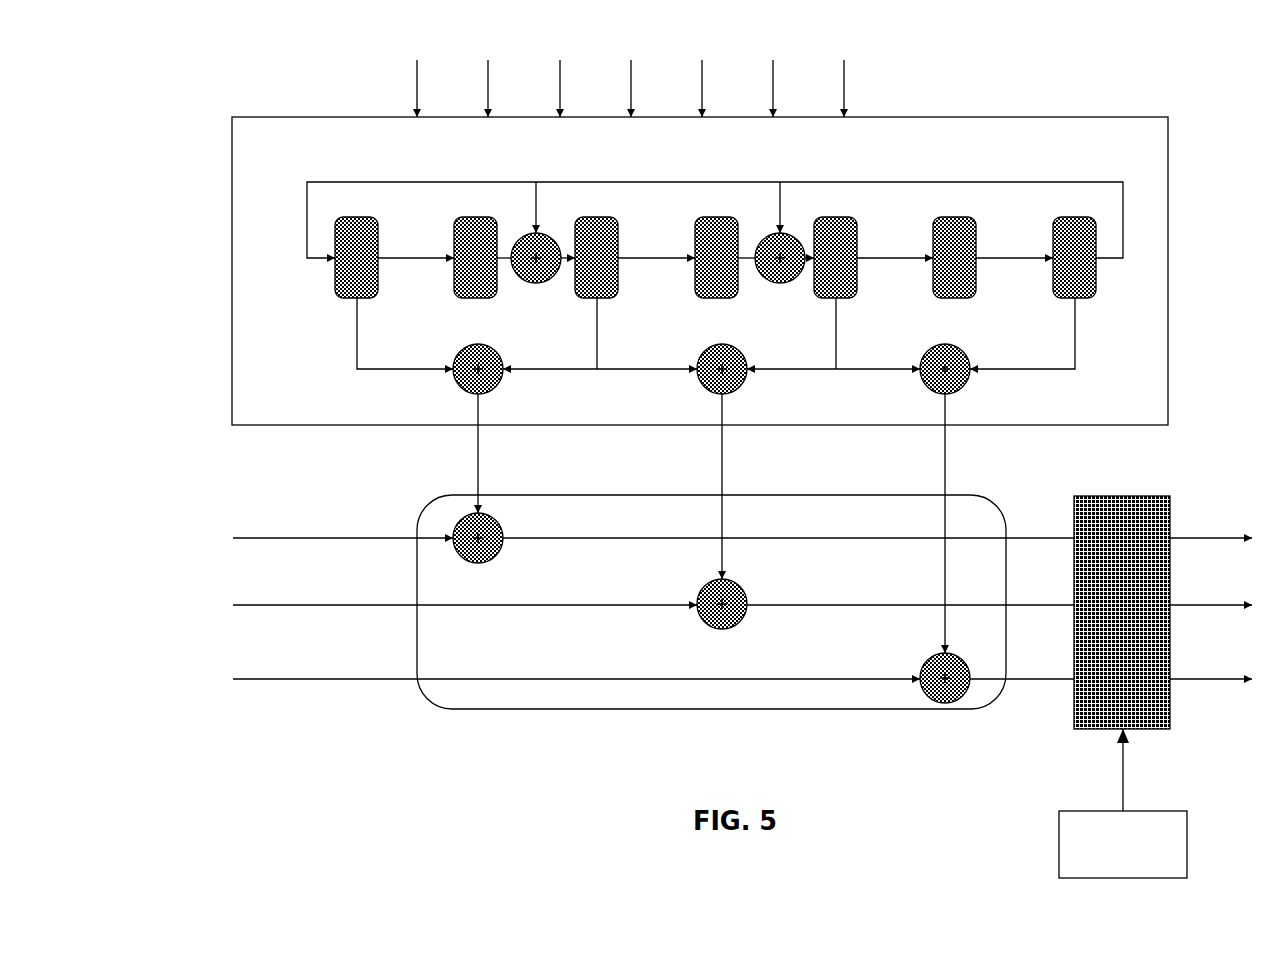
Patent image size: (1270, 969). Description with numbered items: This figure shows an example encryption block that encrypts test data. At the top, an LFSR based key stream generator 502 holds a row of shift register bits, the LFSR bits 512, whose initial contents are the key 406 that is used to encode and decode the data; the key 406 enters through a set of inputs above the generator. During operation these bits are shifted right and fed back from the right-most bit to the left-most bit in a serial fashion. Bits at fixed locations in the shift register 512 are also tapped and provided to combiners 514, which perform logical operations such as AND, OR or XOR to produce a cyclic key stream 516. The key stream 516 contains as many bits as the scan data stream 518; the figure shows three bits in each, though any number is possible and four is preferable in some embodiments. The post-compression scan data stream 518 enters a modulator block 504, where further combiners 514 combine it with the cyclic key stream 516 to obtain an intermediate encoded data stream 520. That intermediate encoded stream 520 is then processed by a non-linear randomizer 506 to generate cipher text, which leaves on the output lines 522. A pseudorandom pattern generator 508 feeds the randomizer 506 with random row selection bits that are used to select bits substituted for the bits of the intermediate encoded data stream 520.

The key 406 is at (630, 71).
The LFSR based key stream generator 502 is at (700, 271).
The LFSR bits 512 is at (575, 297).
The combiners 514 is at (503, 352).
The cyclic key stream 516 is at (711, 523).
The scan data stream 518 is at (535, 565).
The modulator block 504 is at (497, 711).
The intermediate encoded data stream 520 is at (788, 608).
The output scan data 522 is at (1211, 608).
The non-linear randomizer 506 is at (1073, 712).
The pseudorandom pattern generator (PRPG) 508 is at (1123, 803).